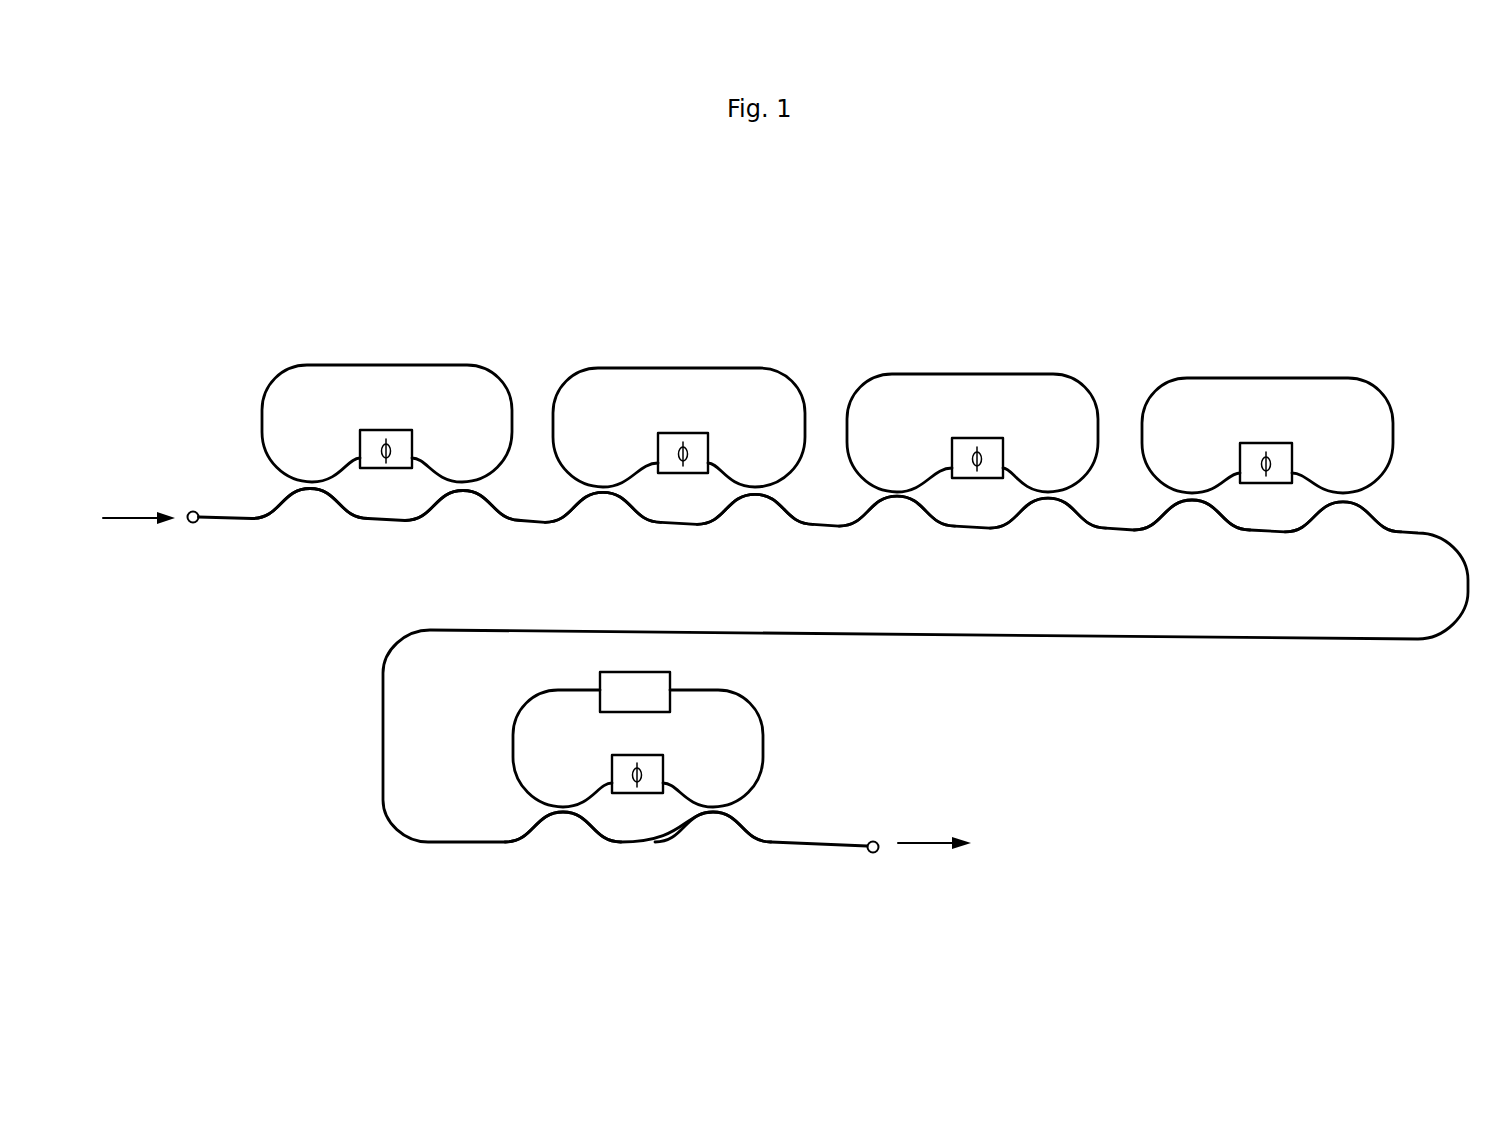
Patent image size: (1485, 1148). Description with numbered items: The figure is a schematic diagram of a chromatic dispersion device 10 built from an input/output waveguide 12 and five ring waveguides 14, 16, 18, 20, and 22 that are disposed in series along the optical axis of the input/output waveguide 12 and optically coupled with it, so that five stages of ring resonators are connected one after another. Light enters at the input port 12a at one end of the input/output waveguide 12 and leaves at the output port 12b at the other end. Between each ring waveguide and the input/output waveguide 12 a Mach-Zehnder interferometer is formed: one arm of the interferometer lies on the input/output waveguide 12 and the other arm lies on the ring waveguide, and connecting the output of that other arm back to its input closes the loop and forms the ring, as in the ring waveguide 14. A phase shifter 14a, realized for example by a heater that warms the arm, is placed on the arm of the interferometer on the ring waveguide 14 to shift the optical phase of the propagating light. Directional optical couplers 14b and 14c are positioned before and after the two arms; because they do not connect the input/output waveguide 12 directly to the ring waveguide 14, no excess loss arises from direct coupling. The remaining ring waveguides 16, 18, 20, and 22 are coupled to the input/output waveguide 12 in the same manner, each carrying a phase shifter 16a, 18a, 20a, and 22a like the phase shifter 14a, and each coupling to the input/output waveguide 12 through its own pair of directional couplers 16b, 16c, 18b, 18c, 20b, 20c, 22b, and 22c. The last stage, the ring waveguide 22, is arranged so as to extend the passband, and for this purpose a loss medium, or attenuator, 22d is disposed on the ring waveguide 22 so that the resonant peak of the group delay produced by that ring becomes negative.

The chromatic dispersion device 10 is at (765, 255).
The input/output waveguide 12 is at (242, 521).
The input port 12a is at (195, 510).
The output port 12b is at (872, 853).
The ring waveguide 14 is at (425, 364).
The phase shifter 14a is at (402, 442).
The directional optical coupler 14b is at (310, 491).
The directional optical coupler 14c is at (467, 493).
The ring waveguide 16 is at (687, 367).
The phase shifter 16a is at (703, 447).
The directional coupler 16b is at (602, 495).
The directional coupler 16c is at (758, 497).
The ring waveguide 18 is at (993, 373).
The phase shifter 18a is at (990, 452).
The directional coupler 18b is at (895, 499).
The directional coupler 18c is at (1047, 500).
The ring waveguide 20 is at (1267, 377).
The phase shifter 20a is at (1273, 458).
The directional coupler 20b is at (1193, 503).
The directional coupler 20c is at (1345, 505).
The ring waveguide 22 is at (757, 712).
The phase shifter 22a is at (655, 767).
The directional coupler 22b is at (562, 813).
The directional coupler 22c is at (717, 815).
The loss medium 22d is at (660, 678).